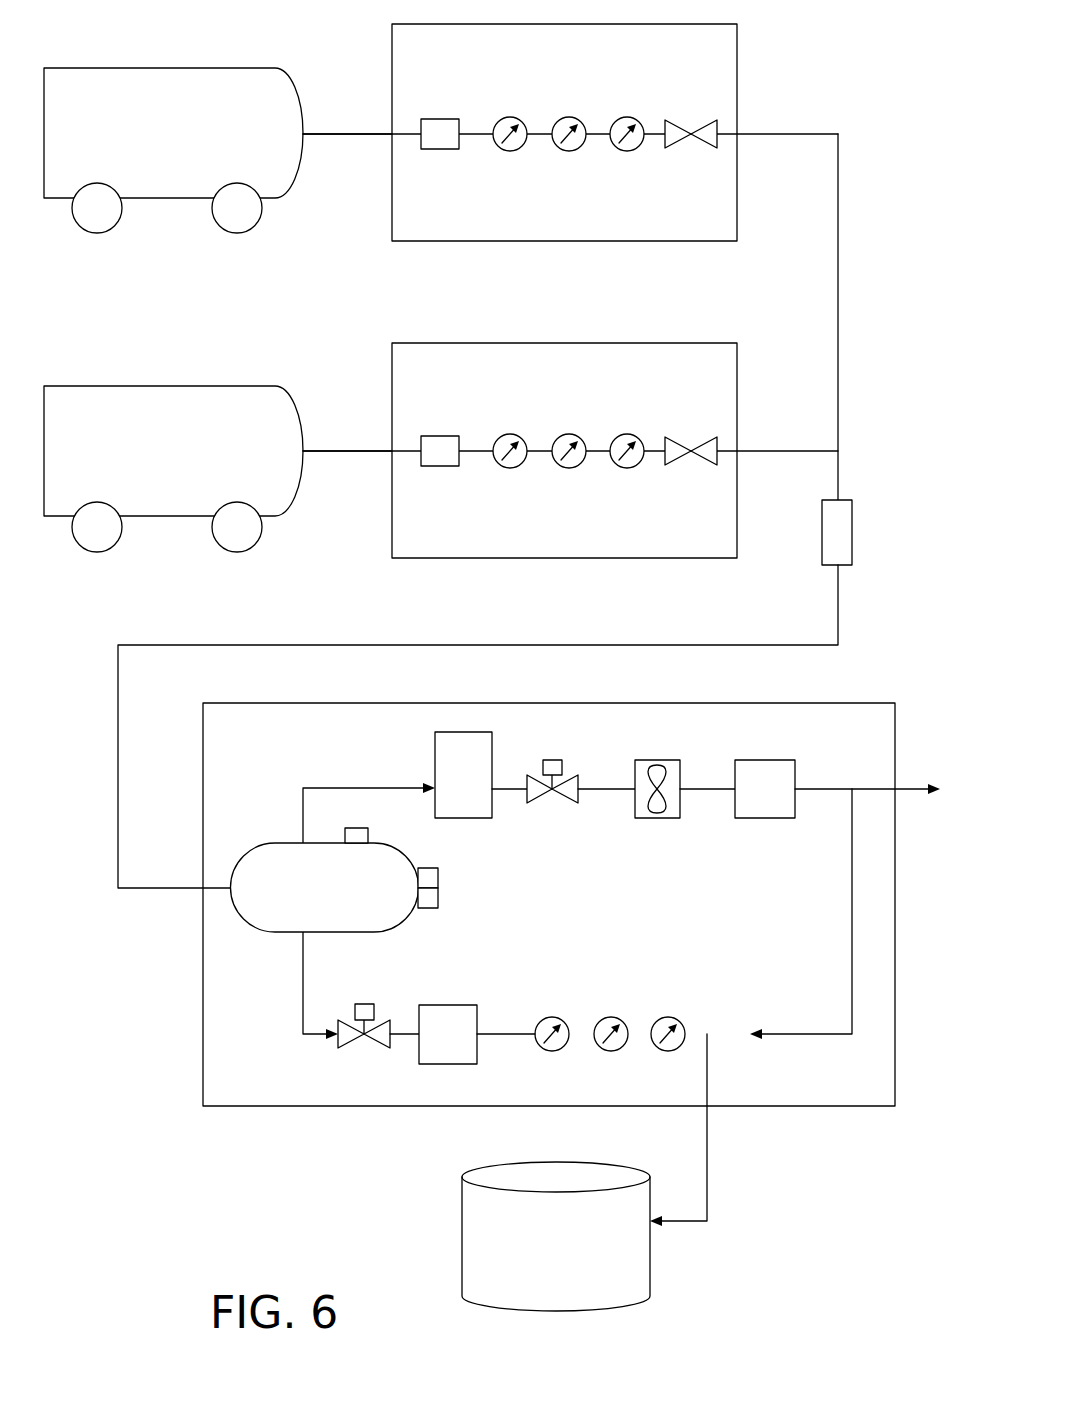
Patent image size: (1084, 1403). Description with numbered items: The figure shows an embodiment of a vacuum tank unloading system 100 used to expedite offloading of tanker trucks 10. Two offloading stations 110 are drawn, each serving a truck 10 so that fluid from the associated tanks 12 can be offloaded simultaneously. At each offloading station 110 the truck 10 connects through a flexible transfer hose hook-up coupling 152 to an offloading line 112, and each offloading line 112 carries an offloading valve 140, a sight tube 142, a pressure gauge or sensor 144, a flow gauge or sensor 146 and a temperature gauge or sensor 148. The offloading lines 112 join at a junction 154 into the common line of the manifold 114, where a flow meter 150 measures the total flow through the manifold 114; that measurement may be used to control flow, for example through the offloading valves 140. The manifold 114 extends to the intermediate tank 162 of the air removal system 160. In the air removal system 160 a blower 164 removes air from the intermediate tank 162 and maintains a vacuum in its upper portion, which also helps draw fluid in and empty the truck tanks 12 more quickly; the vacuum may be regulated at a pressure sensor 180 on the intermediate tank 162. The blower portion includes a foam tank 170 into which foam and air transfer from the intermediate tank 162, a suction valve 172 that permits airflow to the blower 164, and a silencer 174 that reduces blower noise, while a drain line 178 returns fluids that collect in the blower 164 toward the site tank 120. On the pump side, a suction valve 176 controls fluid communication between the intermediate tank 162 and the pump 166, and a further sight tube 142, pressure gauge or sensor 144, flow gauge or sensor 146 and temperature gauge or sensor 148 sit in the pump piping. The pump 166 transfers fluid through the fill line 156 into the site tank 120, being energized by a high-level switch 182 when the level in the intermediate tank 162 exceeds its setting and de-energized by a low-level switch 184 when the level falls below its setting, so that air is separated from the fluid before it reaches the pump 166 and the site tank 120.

The tanker truck 10 is at (195, 83).
The tank 12 is at (155, 201).
The vacuum tank unloading system 100 is at (903, 128).
The offloading station 110 is at (616, 243).
The offloading line 112 is at (330, 130).
The manifold 114 is at (840, 625).
The site tank 120 is at (556, 1236).
The offloading valve 140 is at (683, 150).
The sight tube 142 is at (447, 152).
The pressure gauge or sensor 144 is at (509, 116).
The flow gauge or sensor 146 is at (571, 153).
The temperature gauge or sensor 148 is at (626, 116).
The flow meter 150 is at (854, 536).
The flexible transfer hose hook-up coupling 152 is at (367, 136).
The junction 154 is at (840, 451).
The fill line 156 is at (710, 1167).
The air removal system 160 is at (256, 1108).
The intermediate tank 162 is at (333, 911).
The blower 164 is at (634, 775).
The pump 166 is at (457, 1004).
The foam tank 170 is at (434, 754).
The suction valve 172 is at (567, 804).
The silencer 174 is at (765, 820).
The suction valve 176 is at (362, 1041).
The drain line 178 is at (850, 930).
The pressure sensor 180 is at (369, 836).
The high-level switch 182 is at (439, 875).
The low-level switch 184 is at (439, 900).